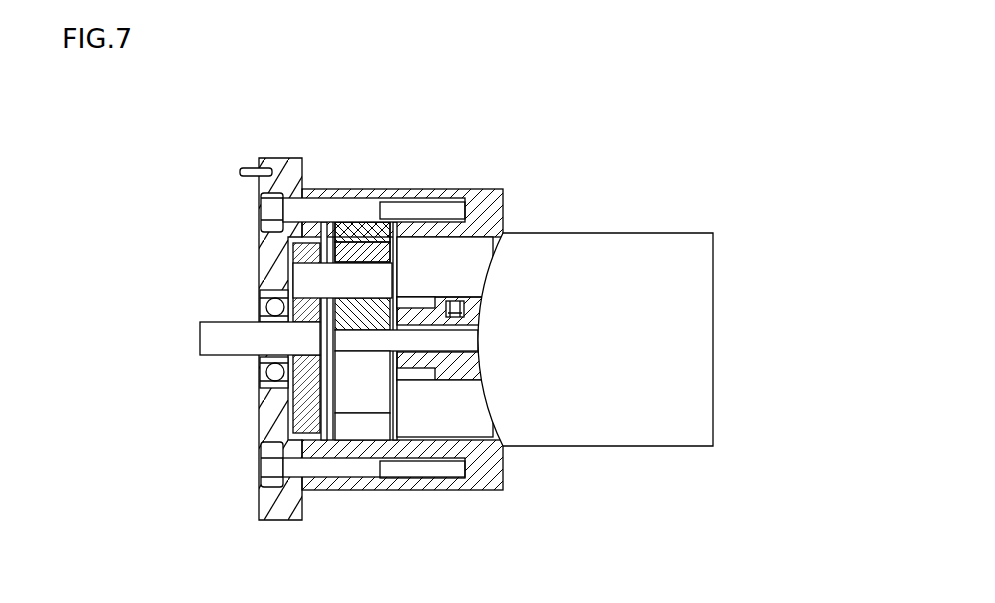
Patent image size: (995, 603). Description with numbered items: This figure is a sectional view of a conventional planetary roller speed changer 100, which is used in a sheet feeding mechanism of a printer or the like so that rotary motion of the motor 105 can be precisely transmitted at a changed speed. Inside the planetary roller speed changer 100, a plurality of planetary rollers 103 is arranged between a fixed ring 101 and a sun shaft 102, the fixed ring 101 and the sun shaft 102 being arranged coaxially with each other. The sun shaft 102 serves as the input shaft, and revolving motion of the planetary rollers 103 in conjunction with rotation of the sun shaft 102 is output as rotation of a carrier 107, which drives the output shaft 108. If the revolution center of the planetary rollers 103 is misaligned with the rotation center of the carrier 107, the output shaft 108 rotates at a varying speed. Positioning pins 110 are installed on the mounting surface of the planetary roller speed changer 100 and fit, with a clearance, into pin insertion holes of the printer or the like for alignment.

The planetary roller speed changer 100 is at (429, 316).
The fixed ring 101 is at (372, 188).
The sun shaft 102 is at (412, 343).
The planetary rollers 103 is at (430, 215).
The motor 105 is at (587, 447).
The carrier 107 is at (311, 187).
The output shaft 108 is at (225, 323).
The positioning pins 110 is at (252, 166).